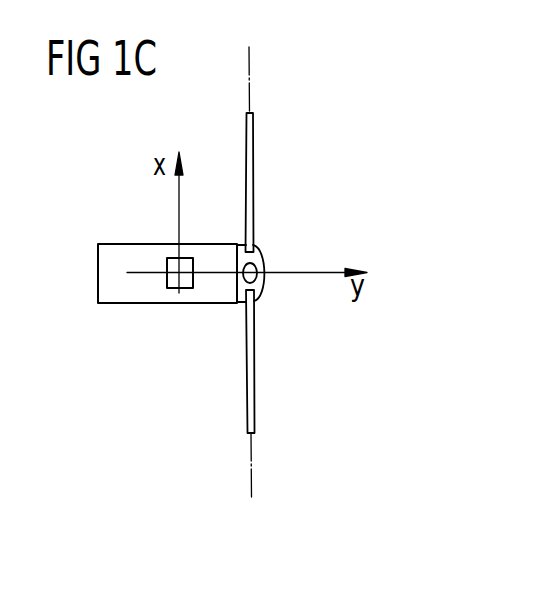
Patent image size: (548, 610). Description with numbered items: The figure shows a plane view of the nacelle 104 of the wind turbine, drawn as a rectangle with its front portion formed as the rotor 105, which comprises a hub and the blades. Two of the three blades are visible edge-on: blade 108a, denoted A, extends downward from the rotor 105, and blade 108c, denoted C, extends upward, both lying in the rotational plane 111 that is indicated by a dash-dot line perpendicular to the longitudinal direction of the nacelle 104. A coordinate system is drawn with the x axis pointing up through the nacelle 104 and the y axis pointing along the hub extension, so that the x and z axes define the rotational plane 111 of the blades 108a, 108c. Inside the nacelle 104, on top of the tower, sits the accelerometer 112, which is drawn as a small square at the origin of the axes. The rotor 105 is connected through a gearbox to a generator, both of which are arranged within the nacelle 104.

The nacelle 104 is at (128, 295).
The accelerometer 112 is at (180, 293).
The rotor 105 is at (262, 284).
The blade 108c is at (250, 212).
The blade 108a is at (250, 325).
The plane 111 is at (252, 483).
The blade C is at (292, 182).
The blade A is at (291, 361).